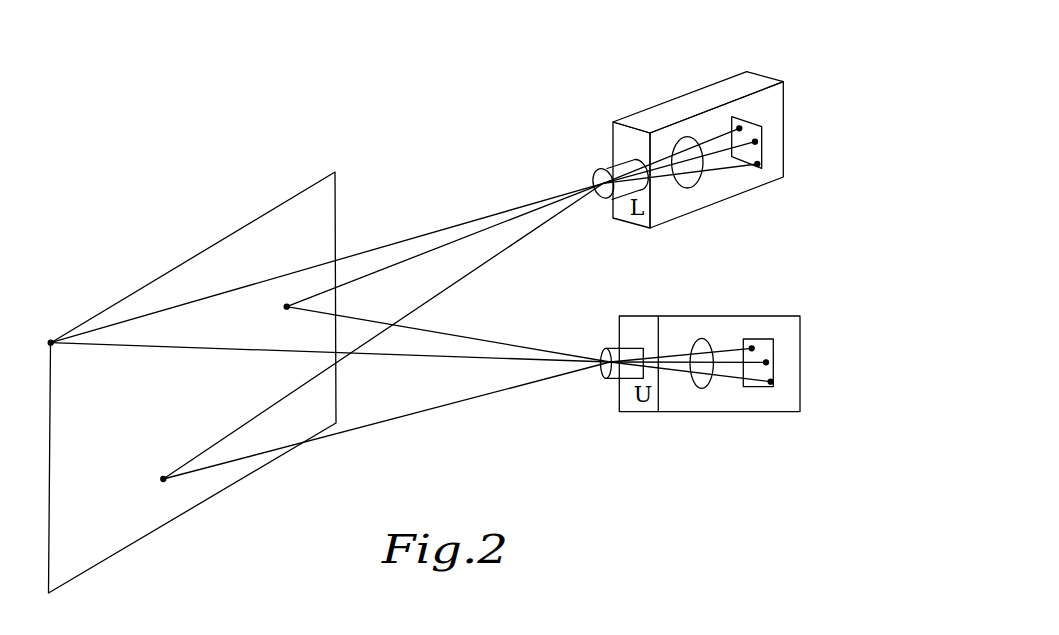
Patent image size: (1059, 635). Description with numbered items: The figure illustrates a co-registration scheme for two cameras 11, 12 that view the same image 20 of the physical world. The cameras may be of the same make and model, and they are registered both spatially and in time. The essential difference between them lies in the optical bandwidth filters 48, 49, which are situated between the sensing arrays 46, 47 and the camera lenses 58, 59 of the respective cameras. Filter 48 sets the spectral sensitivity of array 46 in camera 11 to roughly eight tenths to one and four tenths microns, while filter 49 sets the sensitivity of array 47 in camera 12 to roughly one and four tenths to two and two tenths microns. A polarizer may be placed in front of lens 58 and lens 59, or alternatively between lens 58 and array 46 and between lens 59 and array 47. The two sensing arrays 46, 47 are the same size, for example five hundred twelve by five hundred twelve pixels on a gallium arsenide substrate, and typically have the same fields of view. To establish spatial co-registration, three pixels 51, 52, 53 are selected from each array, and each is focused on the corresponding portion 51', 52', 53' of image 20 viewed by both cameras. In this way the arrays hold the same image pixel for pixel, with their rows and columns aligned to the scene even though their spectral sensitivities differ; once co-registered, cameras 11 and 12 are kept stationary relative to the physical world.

The camera 11 is at (770, 177).
The camera 12 is at (788, 316).
The image 20 is at (300, 190).
The sensing array 46 is at (732, 117).
The sensing array 47 is at (755, 387).
The optical bandwidth filter 48 is at (689, 188).
The optical bandwidth filter 49 is at (702, 388).
The pixel 51 is at (802, 278).
The pixel 52 is at (798, 230).
The pixel 53 is at (757, 197).
The portion of image 51' is at (73, 293).
The portion of image 52' is at (252, 317).
The portion of image 53' is at (163, 526).
The camera lens 58 is at (604, 198).
The camera lens 59 is at (607, 378).